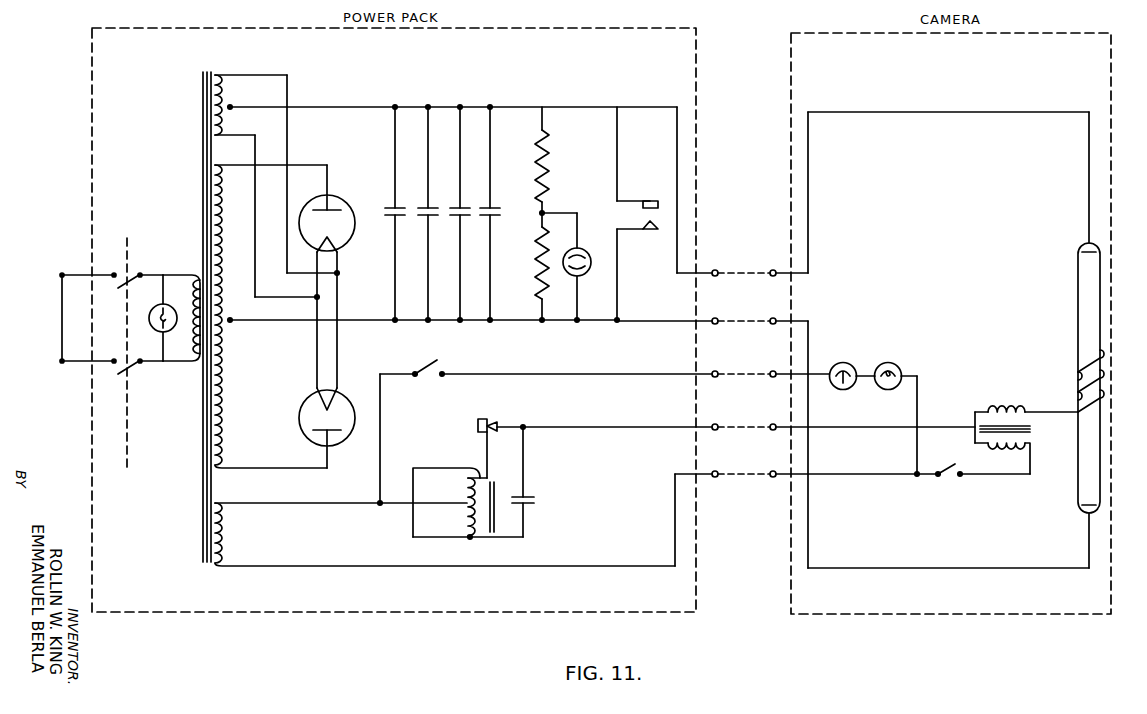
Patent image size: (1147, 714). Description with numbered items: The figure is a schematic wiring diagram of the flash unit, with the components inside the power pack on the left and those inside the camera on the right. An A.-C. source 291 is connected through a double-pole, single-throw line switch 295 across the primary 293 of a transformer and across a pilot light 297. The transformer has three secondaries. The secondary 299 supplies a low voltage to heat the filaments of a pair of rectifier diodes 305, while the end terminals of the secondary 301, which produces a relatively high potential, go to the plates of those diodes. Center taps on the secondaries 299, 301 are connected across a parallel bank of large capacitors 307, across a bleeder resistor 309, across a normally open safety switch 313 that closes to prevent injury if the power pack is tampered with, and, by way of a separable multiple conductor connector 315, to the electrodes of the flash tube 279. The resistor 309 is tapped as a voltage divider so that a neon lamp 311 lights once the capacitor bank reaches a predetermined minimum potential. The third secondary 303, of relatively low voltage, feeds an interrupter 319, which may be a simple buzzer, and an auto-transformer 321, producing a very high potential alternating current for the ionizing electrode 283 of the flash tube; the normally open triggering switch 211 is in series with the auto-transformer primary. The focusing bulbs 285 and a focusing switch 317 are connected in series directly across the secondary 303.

The triggering switch 211 is at (950, 480).
The flash tube 279 is at (1078, 483).
The ionizing electrode 283 is at (1075, 350).
The focusing bulbs 285 is at (898, 363).
The A.-C. source 291 is at (53, 332).
The primary 293 is at (197, 364).
The line switch 295 is at (130, 364).
The pilot light 297 is at (172, 306).
The secondary 299 is at (230, 92).
The secondary 301 is at (215, 458).
The third secondary 303 is at (222, 562).
The rectifier diodes 305 is at (345, 195).
The capacitors 307 is at (453, 216).
The bleeder resistor 309 is at (550, 152).
The neon lamp 311 is at (586, 246).
The safety switch 313 is at (653, 199).
The connector 315 is at (785, 262).
The focusing switch 317 is at (425, 365).
The interrupter 319 is at (458, 530).
The auto-transformer 321 is at (990, 420).